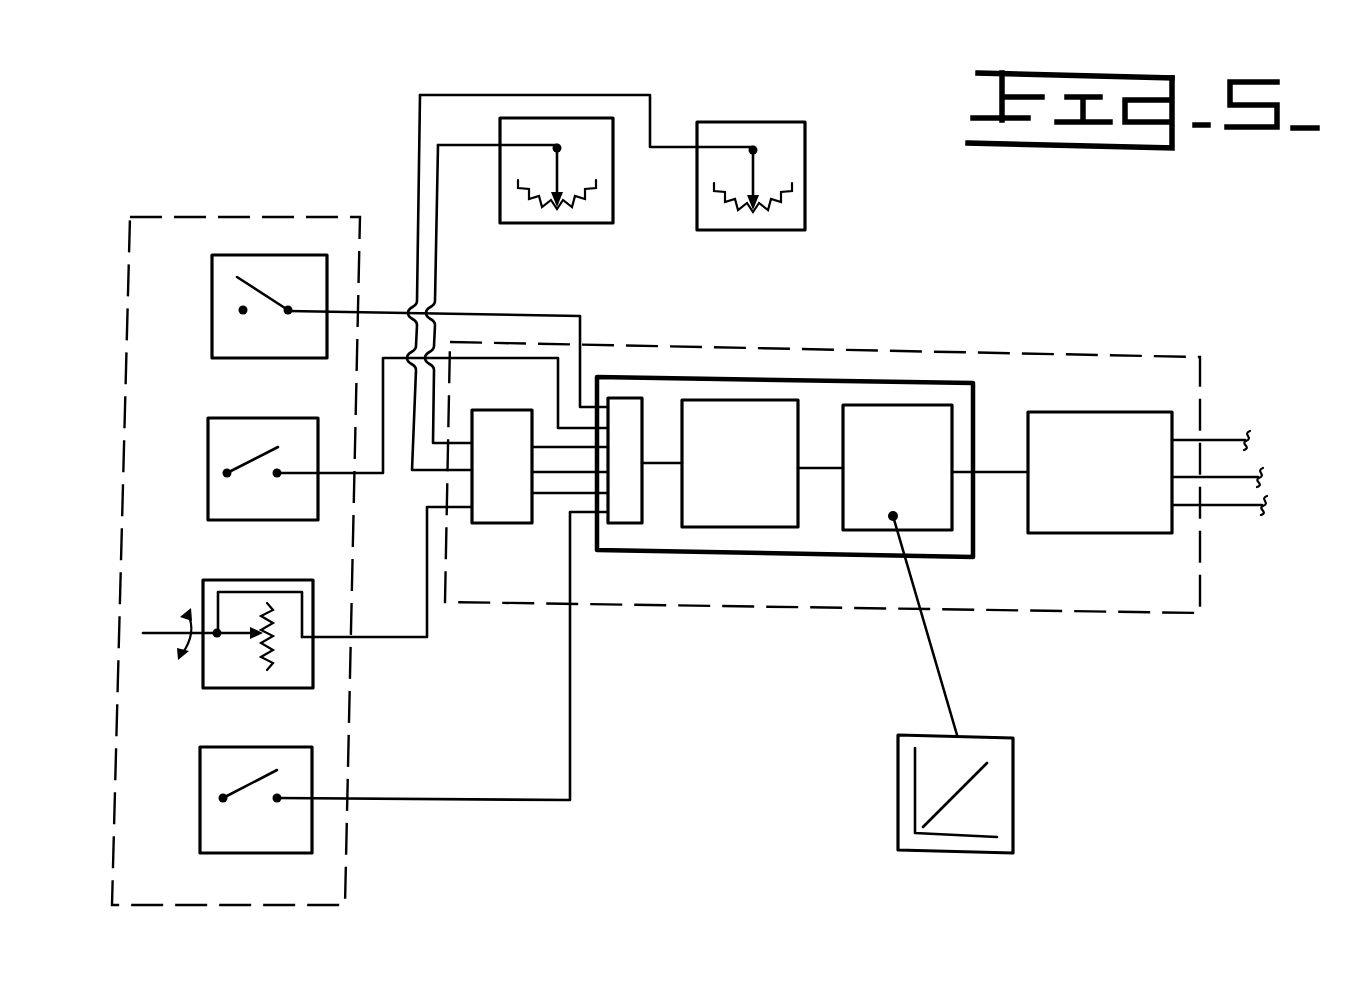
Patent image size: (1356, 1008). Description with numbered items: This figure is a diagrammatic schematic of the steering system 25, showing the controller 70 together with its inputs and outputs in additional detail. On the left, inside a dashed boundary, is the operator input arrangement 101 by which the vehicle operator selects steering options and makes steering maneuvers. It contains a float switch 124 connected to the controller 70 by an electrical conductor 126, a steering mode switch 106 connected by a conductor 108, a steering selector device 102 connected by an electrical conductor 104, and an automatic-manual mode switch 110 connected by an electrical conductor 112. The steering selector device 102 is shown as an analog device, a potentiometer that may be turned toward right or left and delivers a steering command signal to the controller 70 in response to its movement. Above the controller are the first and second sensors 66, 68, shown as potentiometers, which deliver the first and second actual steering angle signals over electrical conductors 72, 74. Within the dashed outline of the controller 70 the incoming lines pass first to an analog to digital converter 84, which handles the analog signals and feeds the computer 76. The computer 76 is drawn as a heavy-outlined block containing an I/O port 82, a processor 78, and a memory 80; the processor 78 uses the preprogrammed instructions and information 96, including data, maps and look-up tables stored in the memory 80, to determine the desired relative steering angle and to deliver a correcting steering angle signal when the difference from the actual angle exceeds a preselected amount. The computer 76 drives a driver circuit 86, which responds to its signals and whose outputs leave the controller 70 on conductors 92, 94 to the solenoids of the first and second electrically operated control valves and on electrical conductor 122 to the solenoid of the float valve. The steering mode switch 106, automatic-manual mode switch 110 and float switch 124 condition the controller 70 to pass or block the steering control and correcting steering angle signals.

The steering system 25 is at (540, 851).
The operator input arrangement 101 is at (160, 215).
The float switch 124 is at (212, 300).
The electrical conductor 126 is at (400, 313).
The electrical conductor 74 is at (420, 160).
The electrical conductor 72 is at (438, 225).
The first sensor 66 is at (580, 225).
The second sensor 68 is at (737, 232).
The steering mode switch 106 is at (232, 418).
The conductor 108 is at (340, 473).
The steering selector device 102 is at (230, 688).
The electrical conductor 104 is at (395, 637).
The automatic-manual mode switch 110 is at (200, 805).
The electrical conductor 112 is at (367, 798).
The controller 70 is at (655, 605).
The analog to digital converter 84 is at (497, 410).
The computer 76 is at (760, 378).
The I/O port 82 is at (627, 398).
The processor 78 is at (755, 527).
The memory 80 is at (903, 405).
The driver circuit 86 is at (1087, 412).
The conductor 92 is at (1217, 440).
The electrical conductor 122 is at (1220, 477).
The conductor 94 is at (1213, 505).
The information 96 is at (1013, 797).